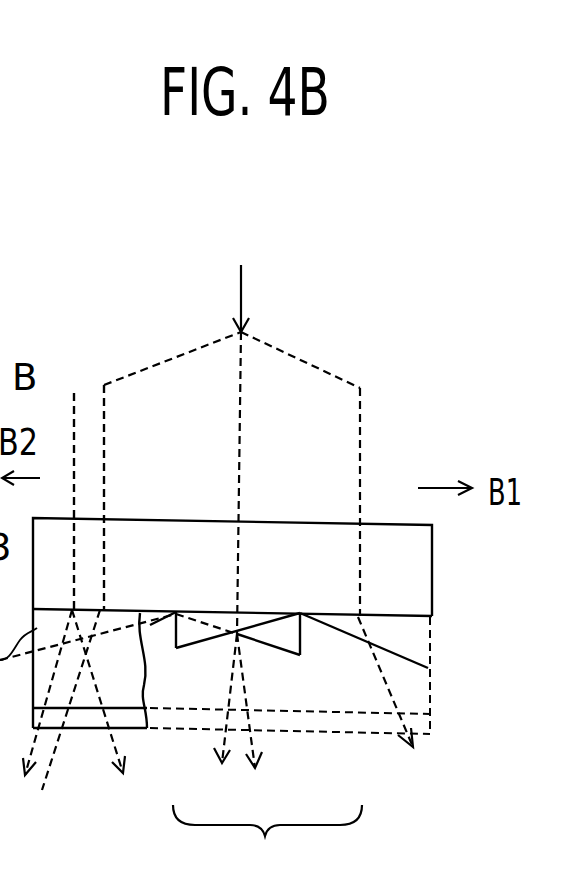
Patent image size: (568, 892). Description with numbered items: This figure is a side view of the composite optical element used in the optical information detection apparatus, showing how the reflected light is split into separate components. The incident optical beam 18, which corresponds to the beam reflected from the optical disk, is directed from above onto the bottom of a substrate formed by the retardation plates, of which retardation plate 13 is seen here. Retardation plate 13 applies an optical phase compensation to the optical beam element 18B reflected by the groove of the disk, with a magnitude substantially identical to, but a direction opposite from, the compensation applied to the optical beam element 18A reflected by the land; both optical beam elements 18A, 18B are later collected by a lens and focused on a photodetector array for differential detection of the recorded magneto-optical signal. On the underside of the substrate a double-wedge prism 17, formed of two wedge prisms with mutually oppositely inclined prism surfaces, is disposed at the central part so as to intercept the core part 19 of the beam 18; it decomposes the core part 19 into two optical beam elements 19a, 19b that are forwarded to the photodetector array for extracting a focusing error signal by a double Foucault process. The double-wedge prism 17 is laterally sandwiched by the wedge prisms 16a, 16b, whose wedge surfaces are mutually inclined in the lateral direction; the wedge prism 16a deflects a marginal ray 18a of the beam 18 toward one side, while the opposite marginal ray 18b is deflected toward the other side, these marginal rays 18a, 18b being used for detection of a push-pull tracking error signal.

The retardation plate 13 is at (285, 552).
The incident optical beam 18 is at (246, 298).
The optical beam element 18B is at (76, 423).
The optical beam element 18A is at (89, 497).
The marginal ray 18b is at (106, 461).
The marginal ray 18a is at (362, 452).
The double-wedge prism 17 is at (284, 636).
The wedge prism 16a is at (392, 640).
The wedge prism 16b is at (150, 625).
The core part 19 is at (267, 844).
The optical beam element 19a is at (250, 735).
The optical beam element 19b is at (222, 735).